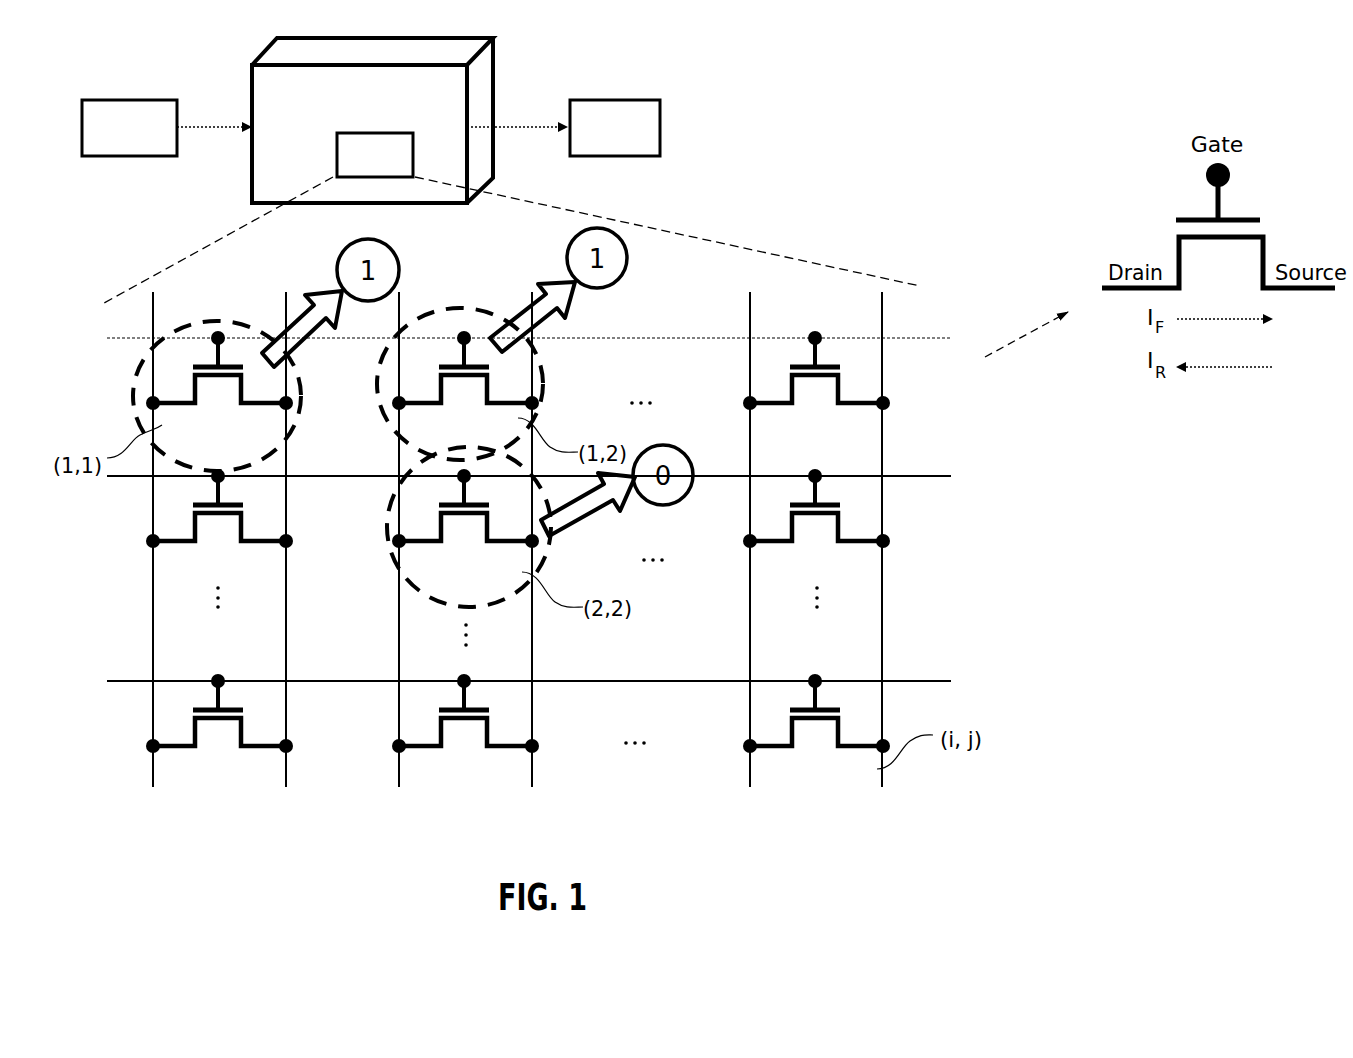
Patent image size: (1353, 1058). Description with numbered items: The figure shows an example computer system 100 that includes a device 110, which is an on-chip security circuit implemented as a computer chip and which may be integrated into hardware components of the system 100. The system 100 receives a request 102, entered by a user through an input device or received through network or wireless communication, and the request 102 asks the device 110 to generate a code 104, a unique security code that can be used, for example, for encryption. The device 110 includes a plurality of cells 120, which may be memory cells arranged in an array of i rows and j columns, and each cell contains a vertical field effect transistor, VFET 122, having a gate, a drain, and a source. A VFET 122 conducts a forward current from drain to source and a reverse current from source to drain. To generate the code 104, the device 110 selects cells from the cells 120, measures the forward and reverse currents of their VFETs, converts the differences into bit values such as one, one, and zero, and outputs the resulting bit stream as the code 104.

The computer system 100 is at (372, 120).
The request 102 is at (129, 128).
The code 104 is at (615, 128).
The device 110 is at (375, 155).
The cells 120 is at (883, 463).
The VFET 122 is at (867, 388).